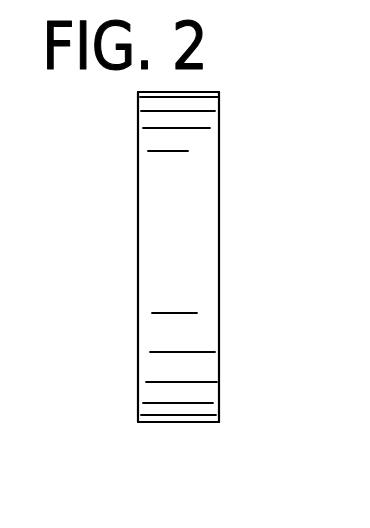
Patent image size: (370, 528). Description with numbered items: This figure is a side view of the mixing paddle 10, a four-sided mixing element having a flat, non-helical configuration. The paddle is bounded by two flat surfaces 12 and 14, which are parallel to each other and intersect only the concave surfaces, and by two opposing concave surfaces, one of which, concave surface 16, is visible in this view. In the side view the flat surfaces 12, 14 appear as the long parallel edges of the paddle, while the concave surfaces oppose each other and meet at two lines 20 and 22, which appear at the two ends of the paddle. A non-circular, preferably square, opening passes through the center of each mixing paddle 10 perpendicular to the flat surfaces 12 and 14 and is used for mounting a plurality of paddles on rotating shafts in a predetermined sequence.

The mixing paddle 10 is at (194, 260).
The flat surface 12 is at (138, 230).
The flat surface 14 is at (220, 213).
The concave surface 16 is at (203, 162).
The line 20 is at (214, 93).
The line 22 is at (195, 422).